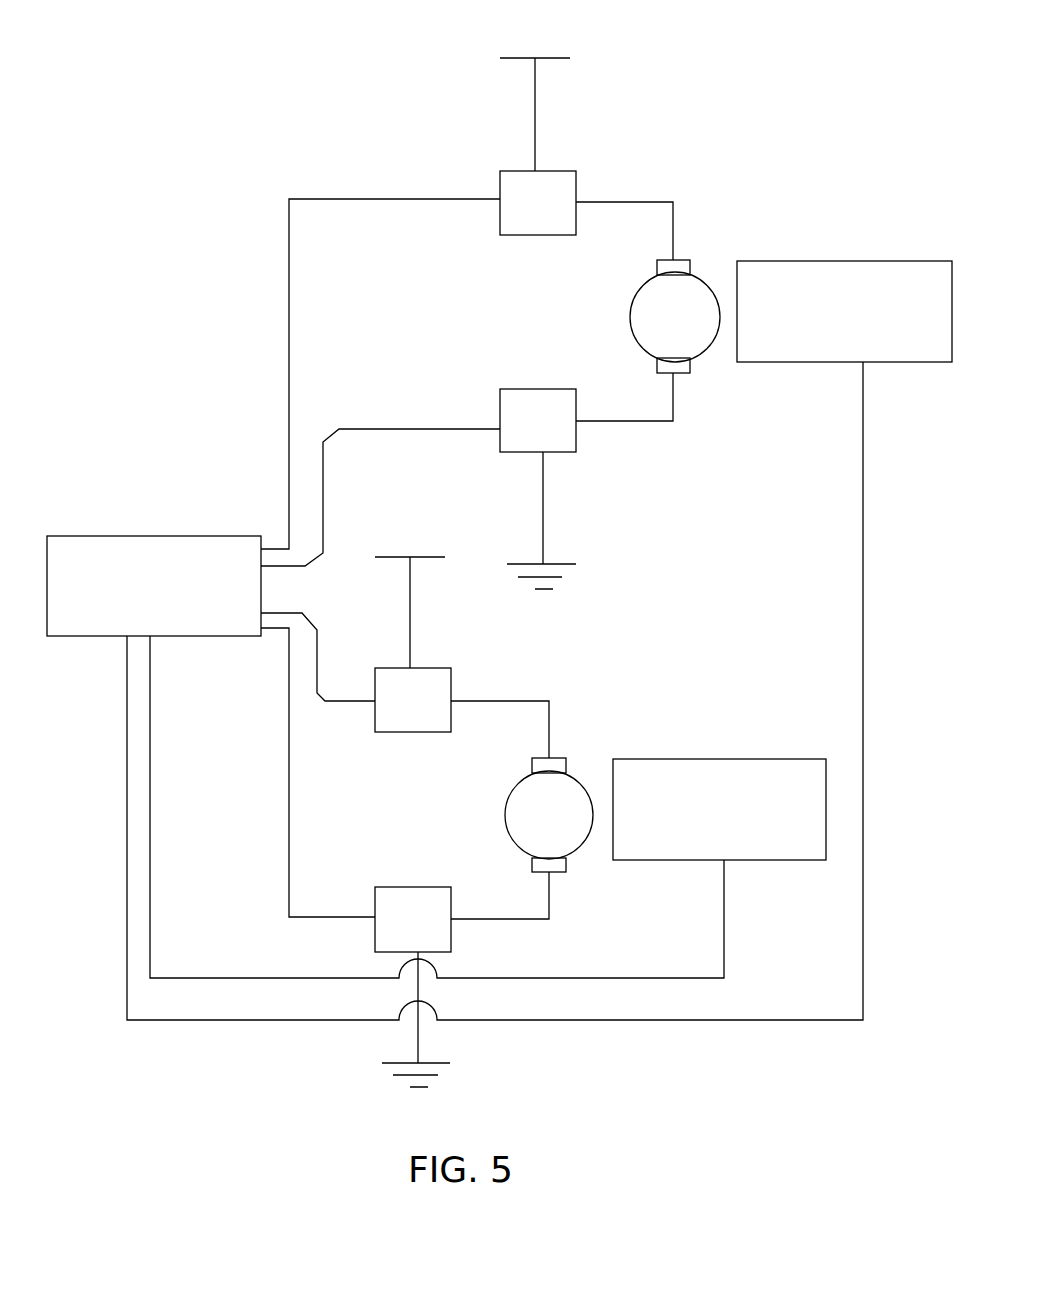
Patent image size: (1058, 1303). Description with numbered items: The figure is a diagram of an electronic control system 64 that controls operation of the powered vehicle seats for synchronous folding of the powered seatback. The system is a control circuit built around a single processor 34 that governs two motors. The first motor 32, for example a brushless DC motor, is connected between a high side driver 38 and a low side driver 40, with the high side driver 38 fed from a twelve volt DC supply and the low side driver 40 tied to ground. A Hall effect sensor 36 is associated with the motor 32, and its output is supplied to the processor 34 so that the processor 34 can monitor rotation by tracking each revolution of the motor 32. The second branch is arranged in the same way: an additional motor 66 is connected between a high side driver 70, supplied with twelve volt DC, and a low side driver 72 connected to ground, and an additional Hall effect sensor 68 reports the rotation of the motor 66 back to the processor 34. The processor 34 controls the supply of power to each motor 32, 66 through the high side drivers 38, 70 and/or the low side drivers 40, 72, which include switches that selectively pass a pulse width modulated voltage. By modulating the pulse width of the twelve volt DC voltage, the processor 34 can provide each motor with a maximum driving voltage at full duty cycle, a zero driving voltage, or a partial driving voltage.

The electronic control system 64 is at (731, 150).
The high side driver 70 is at (576, 183).
The low side driver 72 is at (576, 437).
The motor 66 is at (632, 331).
The Hall effect sensor 68 is at (838, 261).
The processor 34 is at (88, 536).
The high side driver 38 is at (451, 682).
The motor 32 is at (506, 829).
The Hall effect sensor 36 is at (712, 759).
The low side driver 40 is at (451, 936).